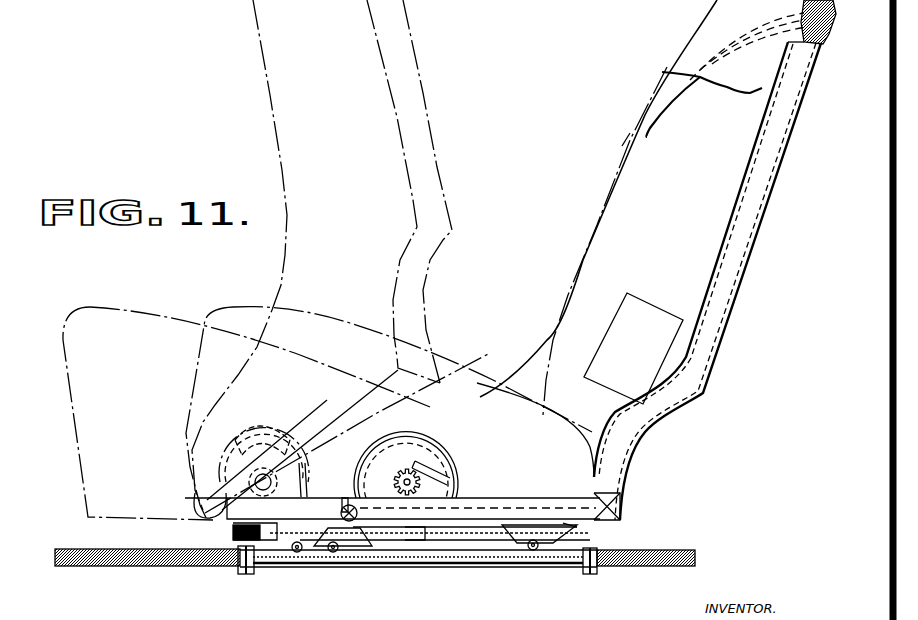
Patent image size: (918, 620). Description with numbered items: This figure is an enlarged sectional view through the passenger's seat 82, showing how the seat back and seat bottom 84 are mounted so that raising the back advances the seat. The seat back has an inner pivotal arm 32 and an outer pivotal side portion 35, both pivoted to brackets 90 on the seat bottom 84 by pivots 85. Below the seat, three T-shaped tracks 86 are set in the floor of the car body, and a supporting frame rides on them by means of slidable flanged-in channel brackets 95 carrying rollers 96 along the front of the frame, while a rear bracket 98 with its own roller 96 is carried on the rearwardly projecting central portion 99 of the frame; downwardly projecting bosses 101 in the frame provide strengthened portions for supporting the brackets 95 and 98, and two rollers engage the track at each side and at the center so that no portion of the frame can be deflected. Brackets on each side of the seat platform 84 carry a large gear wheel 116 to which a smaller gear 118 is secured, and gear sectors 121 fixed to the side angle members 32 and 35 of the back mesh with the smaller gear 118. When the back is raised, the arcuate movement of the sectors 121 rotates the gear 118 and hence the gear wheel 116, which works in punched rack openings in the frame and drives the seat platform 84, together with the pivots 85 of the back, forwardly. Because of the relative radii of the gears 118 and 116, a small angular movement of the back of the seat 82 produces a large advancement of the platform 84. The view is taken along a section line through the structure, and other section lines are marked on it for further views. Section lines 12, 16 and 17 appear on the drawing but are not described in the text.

The section line 12- 12 is at (214, 428).
The section line 16- 16 is at (827, 80).
The section line 17- 17 is at (690, 283).
The inner pivotal arm 32 is at (345, 415).
The outer pivotal side portion 35 is at (496, 403).
The passenger's seat 82 is at (373, 103).
The seat bottom 84 is at (207, 507).
The pivots 85 is at (365, 532).
The tracks 86 is at (238, 548).
The brackets 90 is at (345, 500).
The channel brackets 95 is at (320, 552).
The rollers 96 is at (297, 552).
The rear bracket 98 is at (517, 550).
The rearwardly projecting central portion 99 is at (417, 533).
The bosses 101 is at (577, 533).
The large gear wheel 116 is at (357, 466).
The smaller gear 118 is at (425, 467).
The gear sectors 121 is at (250, 410).